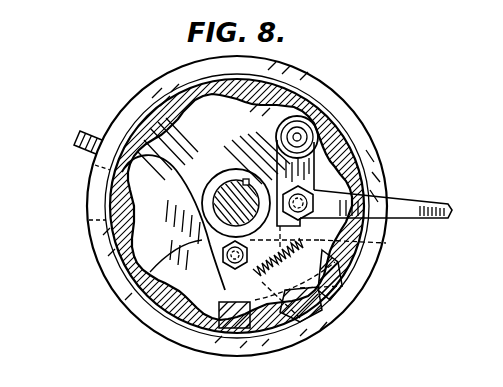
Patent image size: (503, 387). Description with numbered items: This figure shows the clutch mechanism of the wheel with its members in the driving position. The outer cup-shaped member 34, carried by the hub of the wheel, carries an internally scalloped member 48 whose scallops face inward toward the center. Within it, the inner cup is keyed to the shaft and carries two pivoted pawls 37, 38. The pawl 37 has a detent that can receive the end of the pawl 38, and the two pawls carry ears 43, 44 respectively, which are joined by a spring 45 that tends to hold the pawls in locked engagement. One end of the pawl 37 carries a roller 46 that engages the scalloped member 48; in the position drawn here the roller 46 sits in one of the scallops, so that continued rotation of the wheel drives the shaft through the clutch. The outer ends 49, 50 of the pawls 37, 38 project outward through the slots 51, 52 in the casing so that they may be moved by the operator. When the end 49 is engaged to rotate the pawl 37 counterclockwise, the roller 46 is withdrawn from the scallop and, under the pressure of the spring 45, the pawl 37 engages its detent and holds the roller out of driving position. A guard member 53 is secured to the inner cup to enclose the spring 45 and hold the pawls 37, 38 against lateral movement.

The cup-shaped member 34 is at (290, 88).
The pawl 37 is at (315, 166).
The pawl 38 is at (172, 190).
The ear 43 is at (386, 243).
The ear 44 is at (170, 340).
The spring 45 is at (343, 286).
The roller 46 is at (305, 116).
The internally scalloped member 48 is at (177, 113).
The outer end of pawl 49 is at (445, 196).
The outer end of pawl 50 is at (86, 134).
The slot 51 is at (376, 175).
The slot 52 is at (97, 172).
The guard member 53 is at (338, 282).